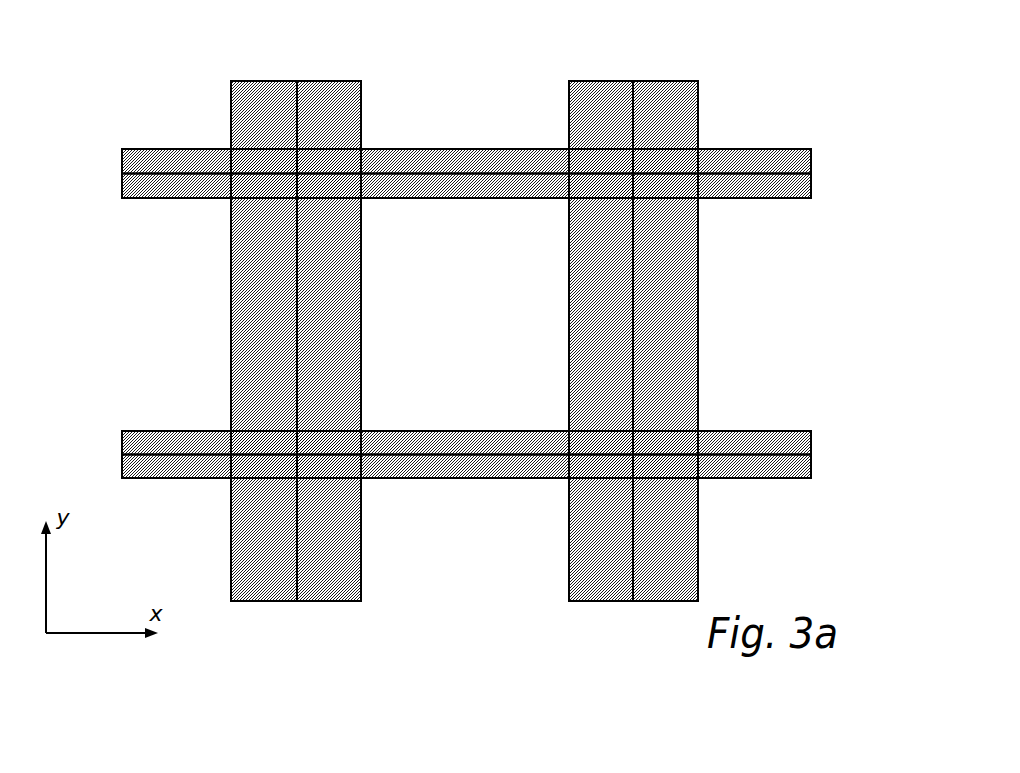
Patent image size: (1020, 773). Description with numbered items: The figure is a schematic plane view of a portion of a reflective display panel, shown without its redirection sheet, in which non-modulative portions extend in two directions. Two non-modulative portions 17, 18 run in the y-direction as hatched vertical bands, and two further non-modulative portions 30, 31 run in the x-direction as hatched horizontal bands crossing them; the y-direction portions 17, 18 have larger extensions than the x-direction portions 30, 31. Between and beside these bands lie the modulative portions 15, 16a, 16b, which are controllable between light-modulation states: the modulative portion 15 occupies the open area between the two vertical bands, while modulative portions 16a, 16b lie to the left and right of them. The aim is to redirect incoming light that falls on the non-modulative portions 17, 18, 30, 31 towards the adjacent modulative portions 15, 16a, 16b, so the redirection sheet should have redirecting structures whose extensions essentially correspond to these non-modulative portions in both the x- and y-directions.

The modulative portion 15 is at (472, 263).
The modulative portion 16a is at (160, 328).
The modulative portion 16b is at (755, 352).
The non-modulative portion 17 is at (259, 100).
The non-modulative portion 18 is at (598, 95).
The non-modulative portion 30 is at (123, 161).
The non-modulative portion 31 is at (130, 444).